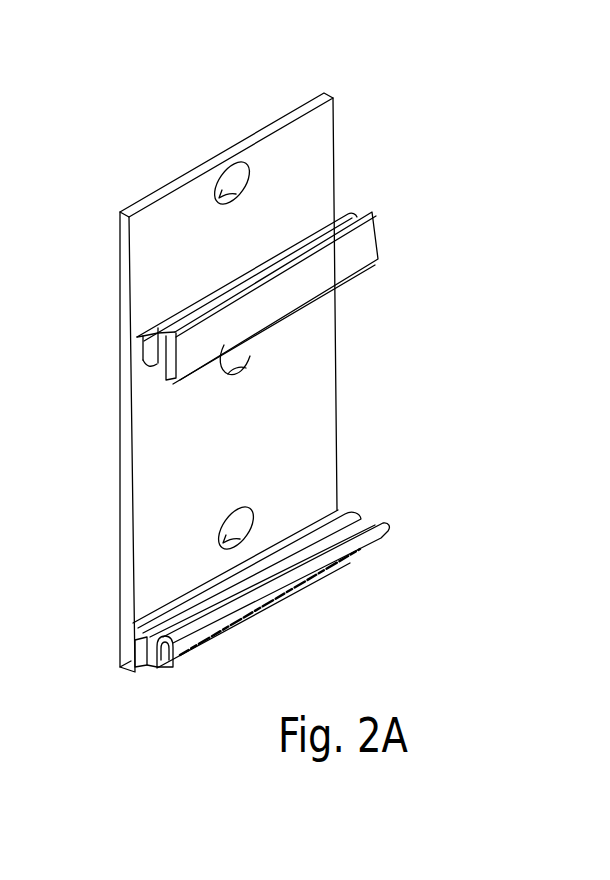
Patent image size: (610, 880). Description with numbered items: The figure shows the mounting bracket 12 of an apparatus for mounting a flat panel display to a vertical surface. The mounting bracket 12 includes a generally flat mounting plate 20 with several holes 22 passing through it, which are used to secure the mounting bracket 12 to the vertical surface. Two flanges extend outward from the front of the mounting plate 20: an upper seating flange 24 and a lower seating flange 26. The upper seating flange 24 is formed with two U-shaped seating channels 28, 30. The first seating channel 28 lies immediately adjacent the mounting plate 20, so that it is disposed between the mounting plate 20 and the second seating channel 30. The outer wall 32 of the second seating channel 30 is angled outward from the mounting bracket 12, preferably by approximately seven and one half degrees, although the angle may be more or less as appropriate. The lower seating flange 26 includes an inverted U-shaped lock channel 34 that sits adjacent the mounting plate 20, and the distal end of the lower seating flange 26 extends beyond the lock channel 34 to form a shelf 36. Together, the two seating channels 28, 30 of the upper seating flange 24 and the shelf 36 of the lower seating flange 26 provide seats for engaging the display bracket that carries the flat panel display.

The mounting bracket 12 is at (305, 97).
The mounting plate 20 is at (320, 170).
The holes 22 is at (217, 185).
The upper seating flange 24 is at (381, 256).
The lower seating flange 26 is at (372, 513).
The first seating channel 28 is at (137, 356).
The second seating channel 30 is at (150, 377).
The outer wall 32 is at (377, 230).
The lock channel 34 is at (133, 628).
The shelf 36 is at (172, 653).